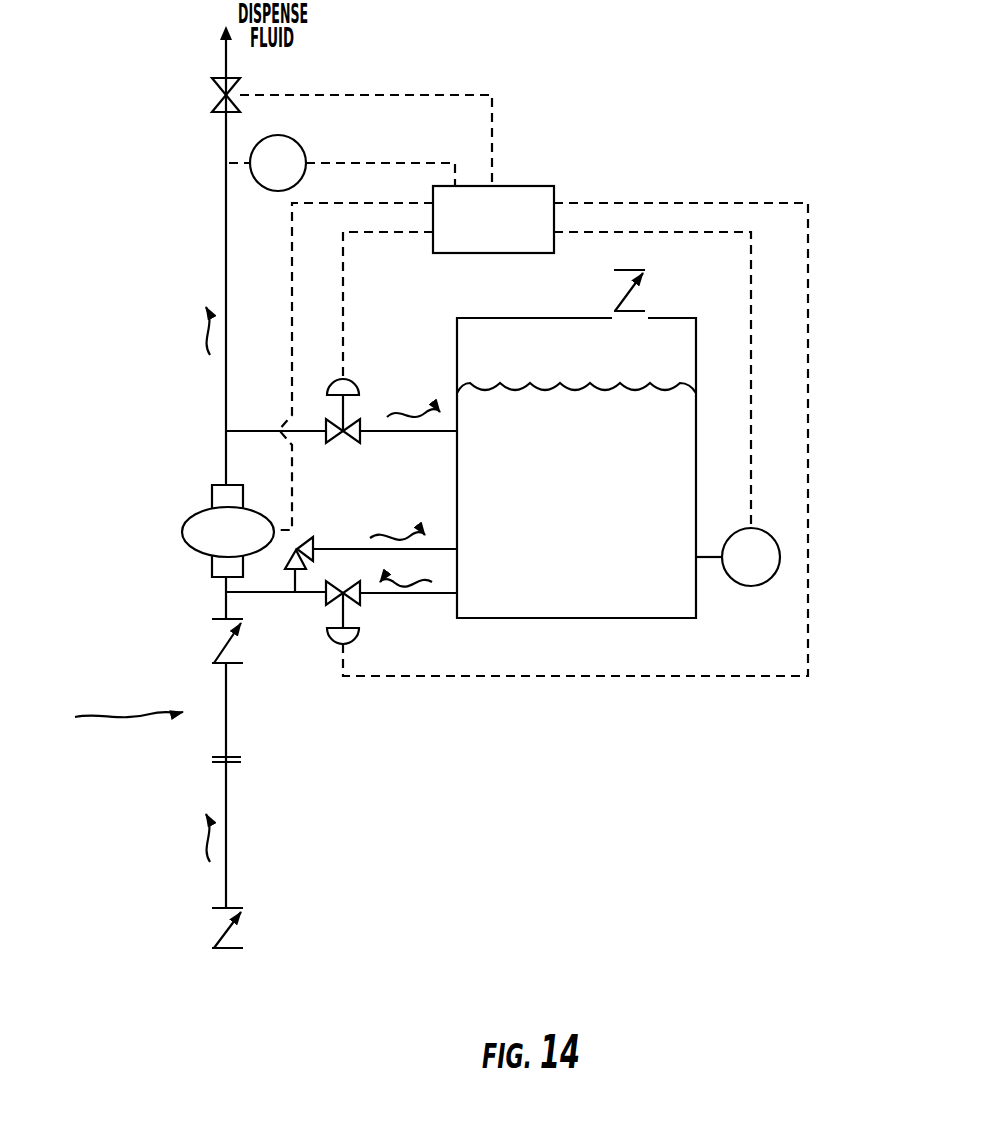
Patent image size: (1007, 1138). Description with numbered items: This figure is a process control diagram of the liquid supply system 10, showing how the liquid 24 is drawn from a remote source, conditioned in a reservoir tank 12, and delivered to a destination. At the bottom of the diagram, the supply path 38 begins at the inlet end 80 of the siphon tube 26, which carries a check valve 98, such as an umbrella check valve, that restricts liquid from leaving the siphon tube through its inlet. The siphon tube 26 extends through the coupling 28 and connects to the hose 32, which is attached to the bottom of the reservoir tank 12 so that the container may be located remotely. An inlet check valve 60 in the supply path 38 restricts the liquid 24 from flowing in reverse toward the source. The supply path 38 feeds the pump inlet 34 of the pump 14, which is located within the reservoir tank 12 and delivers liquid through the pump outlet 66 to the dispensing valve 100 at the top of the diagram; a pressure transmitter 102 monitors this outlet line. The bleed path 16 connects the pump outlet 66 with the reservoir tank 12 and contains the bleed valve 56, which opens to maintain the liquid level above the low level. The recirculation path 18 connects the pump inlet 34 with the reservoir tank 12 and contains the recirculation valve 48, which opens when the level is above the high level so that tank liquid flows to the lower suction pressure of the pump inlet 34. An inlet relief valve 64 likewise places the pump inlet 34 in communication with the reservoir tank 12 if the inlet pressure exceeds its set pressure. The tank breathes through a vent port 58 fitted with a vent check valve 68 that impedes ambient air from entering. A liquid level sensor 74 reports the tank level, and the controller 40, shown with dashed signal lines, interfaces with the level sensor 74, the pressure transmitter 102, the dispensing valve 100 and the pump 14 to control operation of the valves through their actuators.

The system 10 is at (128, 311).
The reservoir tank 12 is at (590, 597).
The pump 14 is at (202, 528).
The bleed path 16 is at (370, 400).
The recirculation path 18 is at (312, 607).
The liquid 24 is at (592, 510).
The siphon tube 26 is at (227, 820).
The coupling 28 is at (208, 758).
The hose 32 is at (227, 712).
The pump inlet 34 is at (227, 588).
The supply path 38 is at (111, 709).
The controller 40 is at (517, 186).
The recirculation valve 48 is at (357, 640).
The bleed valve 56 is at (326, 420).
The vent port 58 is at (626, 324).
The inlet check valve 60 is at (215, 638).
The inlet relief valve 64 is at (305, 540).
The pump outlet 66 is at (224, 477).
The vent check valve 68 is at (648, 285).
The liquid level sensor 74 is at (780, 555).
The inlet end 80 is at (227, 950).
The check valve 98 is at (210, 927).
The dispensing valve 100 is at (226, 79).
The pressure transmitter 102 is at (253, 148).